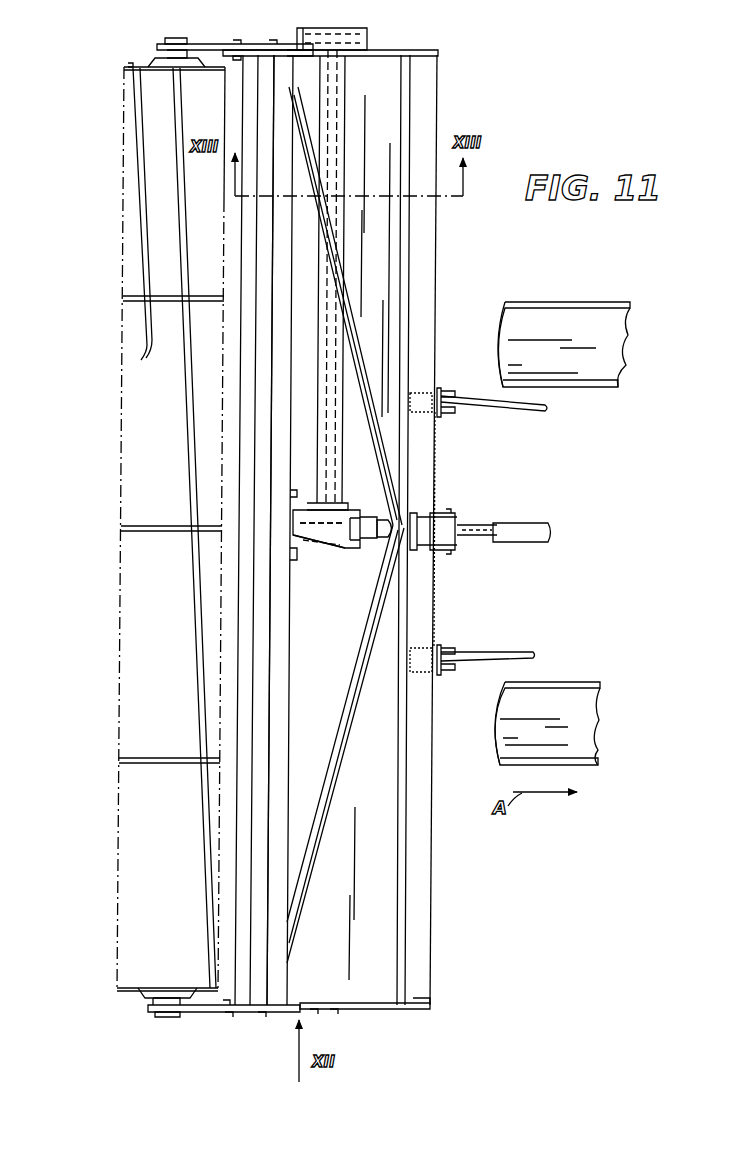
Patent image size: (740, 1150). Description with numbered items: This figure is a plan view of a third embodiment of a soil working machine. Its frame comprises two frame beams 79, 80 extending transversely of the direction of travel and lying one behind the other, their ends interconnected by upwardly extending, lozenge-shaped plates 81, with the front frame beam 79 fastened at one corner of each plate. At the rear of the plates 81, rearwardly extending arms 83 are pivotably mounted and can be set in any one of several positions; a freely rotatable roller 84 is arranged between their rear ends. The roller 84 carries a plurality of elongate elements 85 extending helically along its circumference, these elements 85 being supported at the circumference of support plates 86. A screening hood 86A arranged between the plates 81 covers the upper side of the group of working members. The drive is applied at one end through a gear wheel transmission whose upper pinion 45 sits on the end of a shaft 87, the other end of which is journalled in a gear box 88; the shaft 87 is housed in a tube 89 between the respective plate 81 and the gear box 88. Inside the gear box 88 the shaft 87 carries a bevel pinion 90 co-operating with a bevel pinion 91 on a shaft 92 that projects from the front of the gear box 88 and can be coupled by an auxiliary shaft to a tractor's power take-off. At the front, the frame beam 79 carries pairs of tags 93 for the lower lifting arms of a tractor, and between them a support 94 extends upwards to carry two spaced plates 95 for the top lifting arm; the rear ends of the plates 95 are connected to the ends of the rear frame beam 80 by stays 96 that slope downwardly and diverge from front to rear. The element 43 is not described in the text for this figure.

The housing box 43 is at (367, 38).
The upper pinion 45 is at (321, 9).
The front frame beam 79 is at (418, 928).
The rear frame beam 80 is at (280, 688).
The upwardly extending plates 81 is at (426, 52).
The rearwardly extending arms 83 is at (215, 28).
The freely rotatable roller 84 is at (118, 575).
The elongate elements 85 is at (183, 372).
The support plates 86 is at (126, 68).
The screening hood 86A is at (383, 900).
The shaft 87 is at (344, 147).
The gear box 88 is at (357, 508).
The tube 89 is at (340, 118).
The bevel pinion 90 is at (312, 548).
The bevel pinion 91 is at (351, 548).
The shaft 92 is at (386, 539).
The tags 93 is at (440, 389).
The support 94 is at (418, 461).
The spaced plates 95 is at (455, 517).
The stays 96 is at (353, 317).